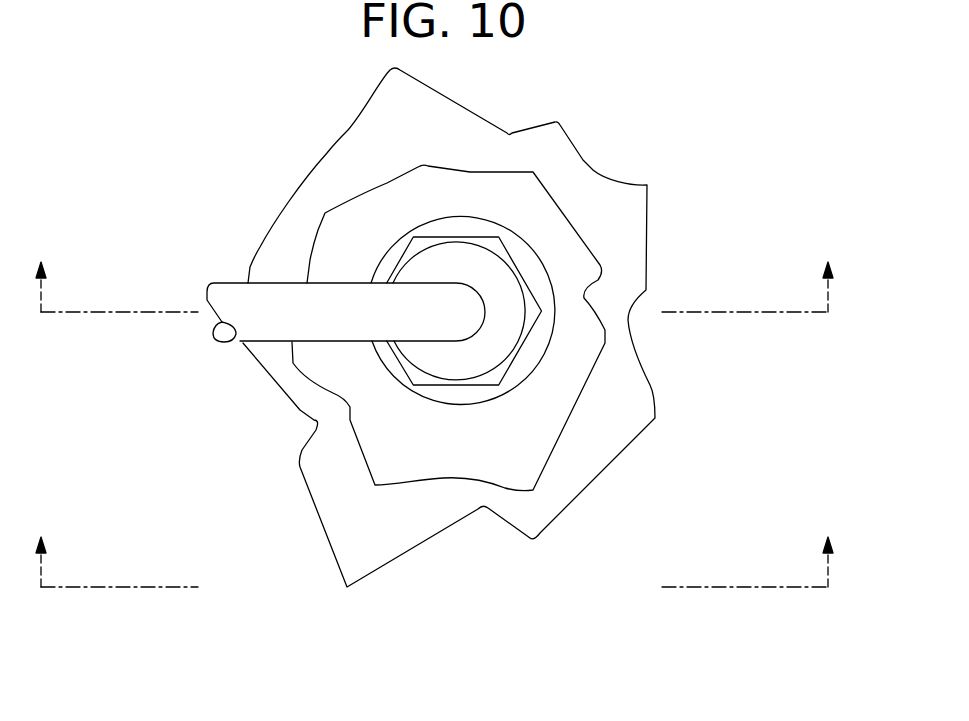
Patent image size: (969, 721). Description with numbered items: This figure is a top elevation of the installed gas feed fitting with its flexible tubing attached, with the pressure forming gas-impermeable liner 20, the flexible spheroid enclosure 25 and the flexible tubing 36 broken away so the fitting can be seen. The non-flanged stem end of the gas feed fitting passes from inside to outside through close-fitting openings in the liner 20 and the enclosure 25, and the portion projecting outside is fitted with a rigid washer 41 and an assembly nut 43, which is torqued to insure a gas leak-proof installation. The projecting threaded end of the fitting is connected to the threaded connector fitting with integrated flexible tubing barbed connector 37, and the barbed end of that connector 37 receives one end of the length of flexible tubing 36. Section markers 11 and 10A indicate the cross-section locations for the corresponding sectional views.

The pressure forming gas-impermeable liner 20 is at (593, 168).
The flexible spheroid enclosure 25 is at (325, 213).
The flexible tubing 36 is at (227, 343).
The threaded connector fitting with integrated flexible tubing barbed connector 37 is at (495, 247).
The rigid washer 41 is at (547, 273).
The assembly nut 43 is at (540, 323).
The section line 11- 11 is at (441, 262).
The section line 10A- 10A is at (454, 537).